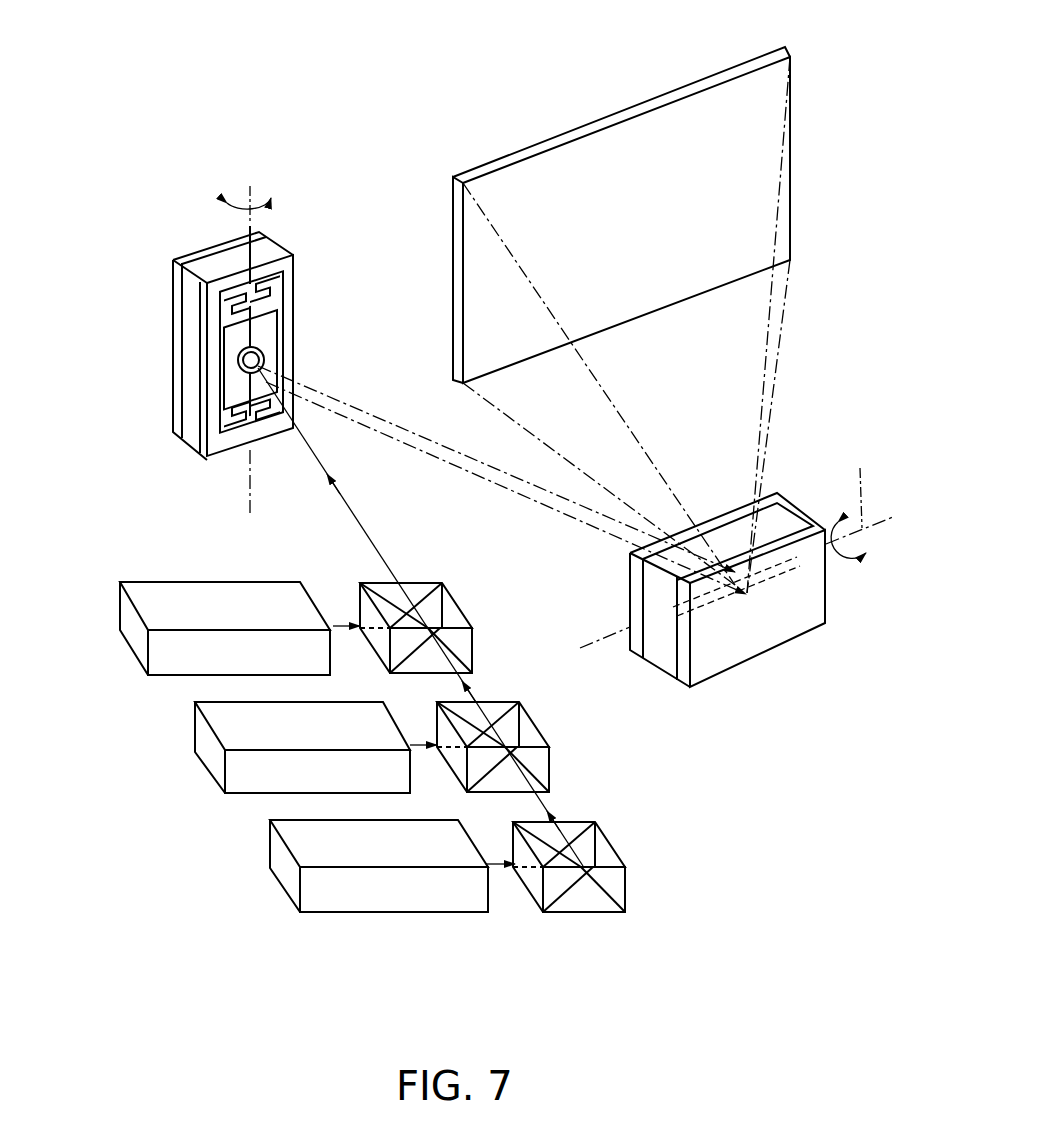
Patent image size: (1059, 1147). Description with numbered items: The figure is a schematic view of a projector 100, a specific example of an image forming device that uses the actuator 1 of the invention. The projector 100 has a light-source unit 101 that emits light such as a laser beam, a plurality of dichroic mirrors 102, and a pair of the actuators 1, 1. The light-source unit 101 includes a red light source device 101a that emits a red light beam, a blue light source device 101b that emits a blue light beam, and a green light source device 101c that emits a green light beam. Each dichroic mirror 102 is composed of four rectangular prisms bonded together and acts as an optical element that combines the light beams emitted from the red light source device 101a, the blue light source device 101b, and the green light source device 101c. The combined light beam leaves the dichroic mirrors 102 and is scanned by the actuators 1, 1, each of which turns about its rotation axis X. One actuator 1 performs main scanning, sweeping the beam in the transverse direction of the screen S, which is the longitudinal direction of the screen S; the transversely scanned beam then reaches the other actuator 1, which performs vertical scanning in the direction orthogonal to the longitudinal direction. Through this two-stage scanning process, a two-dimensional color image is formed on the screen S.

The projector 100 is at (170, 90).
The actuator 1 is at (170, 300).
The screen S is at (795, 177).
The rotation axis X is at (560, 404).
The light-source unit 101 is at (158, 852).
The red light source device 101a is at (163, 610).
The blue light source device 101b is at (227, 727).
The green light source device 101c is at (297, 835).
The dichroic mirror 102 is at (466, 611).